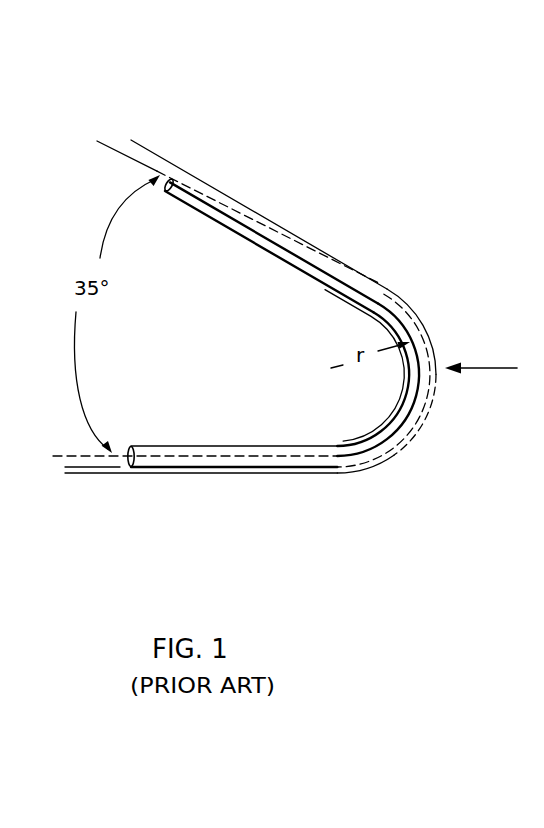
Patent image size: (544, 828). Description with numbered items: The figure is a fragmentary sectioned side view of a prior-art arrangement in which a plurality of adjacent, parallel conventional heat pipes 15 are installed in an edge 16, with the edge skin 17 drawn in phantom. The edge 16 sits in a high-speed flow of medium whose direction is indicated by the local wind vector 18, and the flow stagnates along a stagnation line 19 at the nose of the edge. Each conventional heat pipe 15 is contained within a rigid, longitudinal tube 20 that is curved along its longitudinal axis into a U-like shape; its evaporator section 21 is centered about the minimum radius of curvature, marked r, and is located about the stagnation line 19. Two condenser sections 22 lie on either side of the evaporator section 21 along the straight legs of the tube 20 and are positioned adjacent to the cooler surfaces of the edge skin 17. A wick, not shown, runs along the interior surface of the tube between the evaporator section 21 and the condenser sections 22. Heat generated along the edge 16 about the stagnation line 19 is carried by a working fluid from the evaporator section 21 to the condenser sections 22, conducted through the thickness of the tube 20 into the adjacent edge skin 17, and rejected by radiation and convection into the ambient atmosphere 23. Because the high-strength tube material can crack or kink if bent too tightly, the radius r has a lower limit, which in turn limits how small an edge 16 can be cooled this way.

The conventional heat pipe 15 is at (284, 263).
The edge 16 is at (441, 316).
The edge skin 17 is at (170, 165).
The local wind vector 18 is at (492, 368).
The stagnation line 19 is at (437, 376).
The tube 20 is at (340, 471).
The evaporator section 21 is at (404, 372).
The condenser section 22 is at (249, 207).
The ambient atmosphere 23 is at (375, 160).